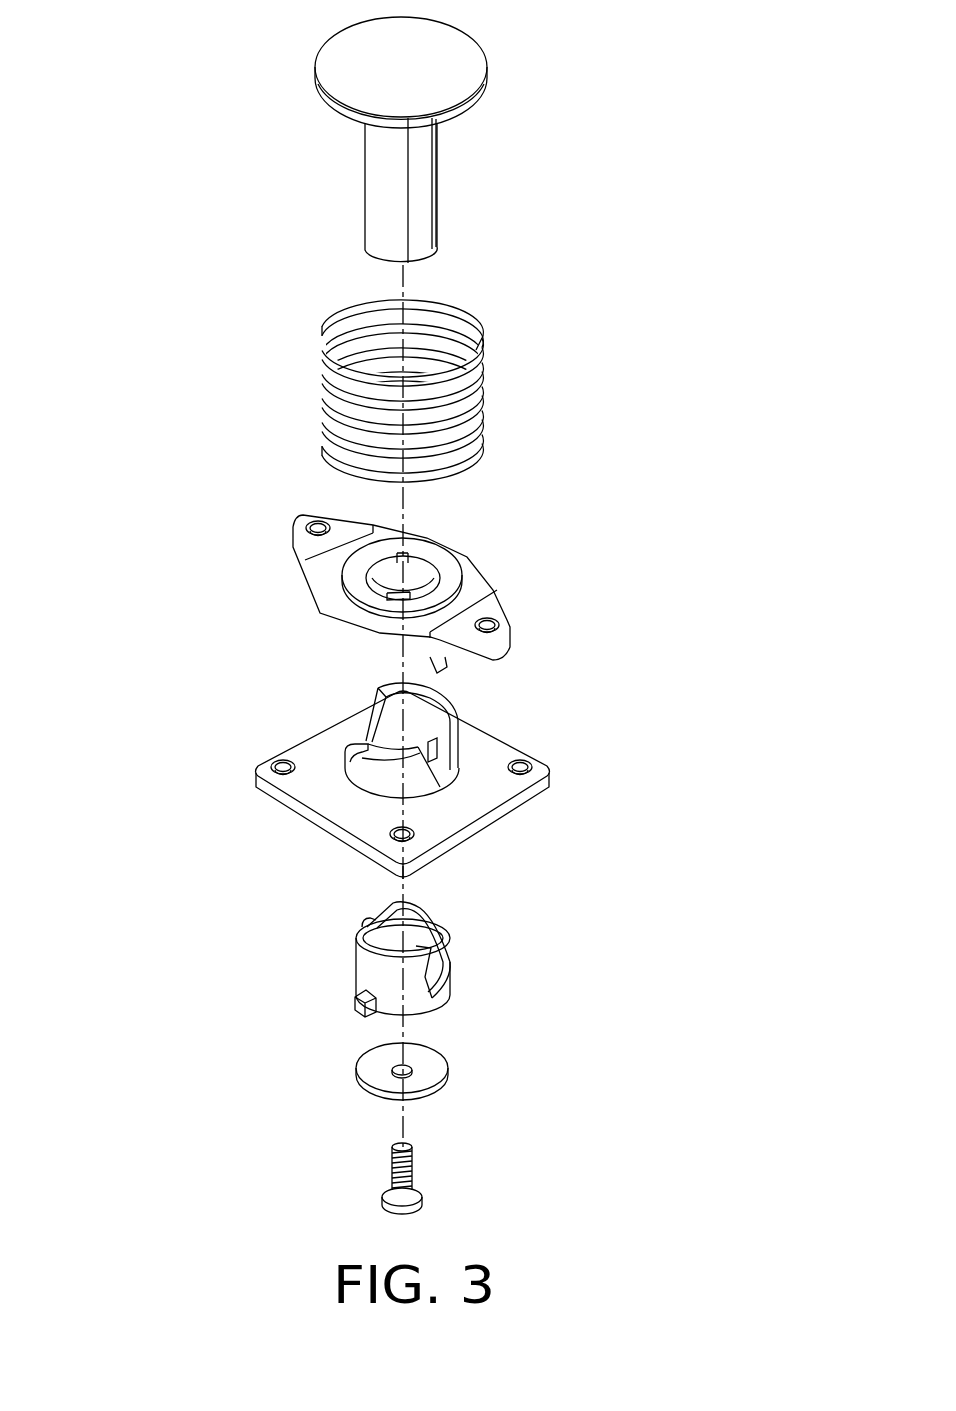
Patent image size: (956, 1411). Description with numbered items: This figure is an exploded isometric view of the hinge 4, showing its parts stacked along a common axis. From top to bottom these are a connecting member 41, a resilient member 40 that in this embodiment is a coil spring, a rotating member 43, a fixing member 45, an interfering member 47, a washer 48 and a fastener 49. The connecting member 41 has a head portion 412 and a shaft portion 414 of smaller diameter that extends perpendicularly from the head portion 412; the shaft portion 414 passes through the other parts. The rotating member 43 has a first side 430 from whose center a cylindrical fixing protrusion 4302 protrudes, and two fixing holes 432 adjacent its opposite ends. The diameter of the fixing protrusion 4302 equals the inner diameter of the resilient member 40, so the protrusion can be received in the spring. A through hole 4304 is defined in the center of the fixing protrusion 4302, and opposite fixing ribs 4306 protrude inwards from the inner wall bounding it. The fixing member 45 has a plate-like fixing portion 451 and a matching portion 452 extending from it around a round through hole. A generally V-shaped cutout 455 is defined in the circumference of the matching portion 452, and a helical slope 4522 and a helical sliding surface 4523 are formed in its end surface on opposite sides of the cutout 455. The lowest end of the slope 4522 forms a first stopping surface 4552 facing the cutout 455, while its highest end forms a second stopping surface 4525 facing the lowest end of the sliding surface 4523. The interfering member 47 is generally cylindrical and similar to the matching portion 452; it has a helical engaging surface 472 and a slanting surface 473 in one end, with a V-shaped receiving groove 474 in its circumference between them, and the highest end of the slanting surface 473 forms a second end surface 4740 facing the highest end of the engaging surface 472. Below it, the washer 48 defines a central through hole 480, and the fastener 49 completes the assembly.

The hinge 4 is at (137, 208).
The connecting member 41 is at (481, 140).
The head portion 412 is at (443, 75).
The shaft portion 414 is at (473, 190).
The resilient member 40 is at (472, 397).
The rotating member 43 is at (402, 571).
The first side 430 is at (325, 568).
The fixing holes 432 is at (293, 525).
The fixing protrusion 4302 is at (447, 565).
The through hole 4304 is at (350, 617).
The fixing ribs 4306 is at (388, 572).
The fixing member 45 is at (412, 788).
The fixing portion 451 is at (493, 790).
The matching portion 452 is at (400, 785).
The slope 4522 is at (447, 705).
The sliding surface 4523 is at (363, 750).
The second stopping surface 4525 is at (380, 697).
The cutout 455 is at (460, 777).
The first stopping surface 4552 is at (450, 740).
The interfering member 47 is at (376, 929).
The engaging surface 472 is at (438, 940).
The slanting surface 473 is at (365, 942).
The receiving groove 474 is at (387, 910).
The second end surface 4740 is at (359, 911).
The washer 48 is at (390, 1063).
The through hole 480 is at (398, 1068).
The fastener 49 is at (412, 1167).